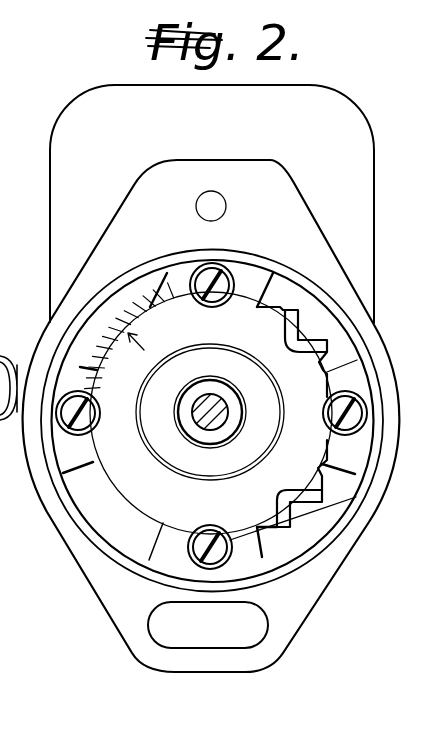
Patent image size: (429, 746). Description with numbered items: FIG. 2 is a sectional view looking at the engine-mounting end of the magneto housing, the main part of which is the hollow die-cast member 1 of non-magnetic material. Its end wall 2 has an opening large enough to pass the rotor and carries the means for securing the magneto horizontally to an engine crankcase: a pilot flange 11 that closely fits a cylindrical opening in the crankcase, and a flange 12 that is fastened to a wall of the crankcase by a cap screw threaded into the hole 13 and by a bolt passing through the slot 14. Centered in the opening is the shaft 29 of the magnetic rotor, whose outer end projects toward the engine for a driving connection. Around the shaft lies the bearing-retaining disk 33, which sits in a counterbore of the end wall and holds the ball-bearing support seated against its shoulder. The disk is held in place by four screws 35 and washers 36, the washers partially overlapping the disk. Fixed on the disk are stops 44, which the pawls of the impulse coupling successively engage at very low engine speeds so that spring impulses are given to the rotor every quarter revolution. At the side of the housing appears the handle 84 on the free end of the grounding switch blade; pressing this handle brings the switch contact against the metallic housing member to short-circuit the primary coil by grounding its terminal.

The die-cast member 1 is at (364, 87).
The end wall 2 is at (75, 206).
The pilot flange 11 is at (292, 273).
The flange 12 is at (207, 170).
The hole 13 is at (226, 205).
The slot 14 is at (208, 625).
The shaft 29 is at (218, 420).
The bearing-retaining disk 33 is at (266, 333).
The screws 35 is at (203, 277).
The washers 36 is at (233, 287).
The stops 44 is at (289, 328).
The handle 84 is at (12, 360).